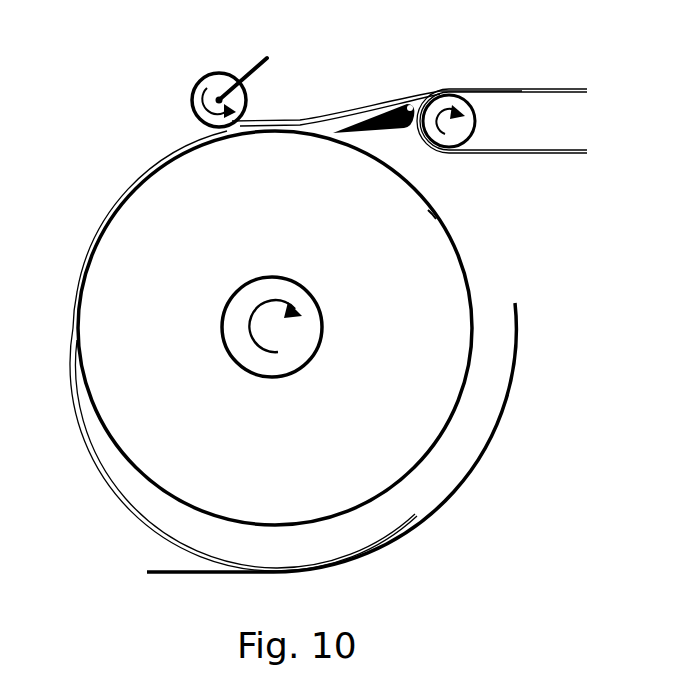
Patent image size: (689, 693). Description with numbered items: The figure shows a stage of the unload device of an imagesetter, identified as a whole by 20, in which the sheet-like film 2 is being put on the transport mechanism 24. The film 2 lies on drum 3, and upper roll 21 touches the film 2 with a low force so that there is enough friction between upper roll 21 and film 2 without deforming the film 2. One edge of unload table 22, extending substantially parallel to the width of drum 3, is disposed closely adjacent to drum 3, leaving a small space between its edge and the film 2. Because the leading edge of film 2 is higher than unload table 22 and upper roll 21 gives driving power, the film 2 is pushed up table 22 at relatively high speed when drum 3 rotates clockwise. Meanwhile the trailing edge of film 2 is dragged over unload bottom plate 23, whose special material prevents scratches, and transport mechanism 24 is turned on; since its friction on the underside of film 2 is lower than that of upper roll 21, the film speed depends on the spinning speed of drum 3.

The apparatus 20 is at (148, 121).
The upper roll 21 is at (222, 83).
The film 2 is at (333, 116).
The unload table 22 is at (387, 128).
The transport mechanism 24 is at (565, 90).
The drum 3 is at (437, 268).
The unload bottom plate 23 is at (478, 462).